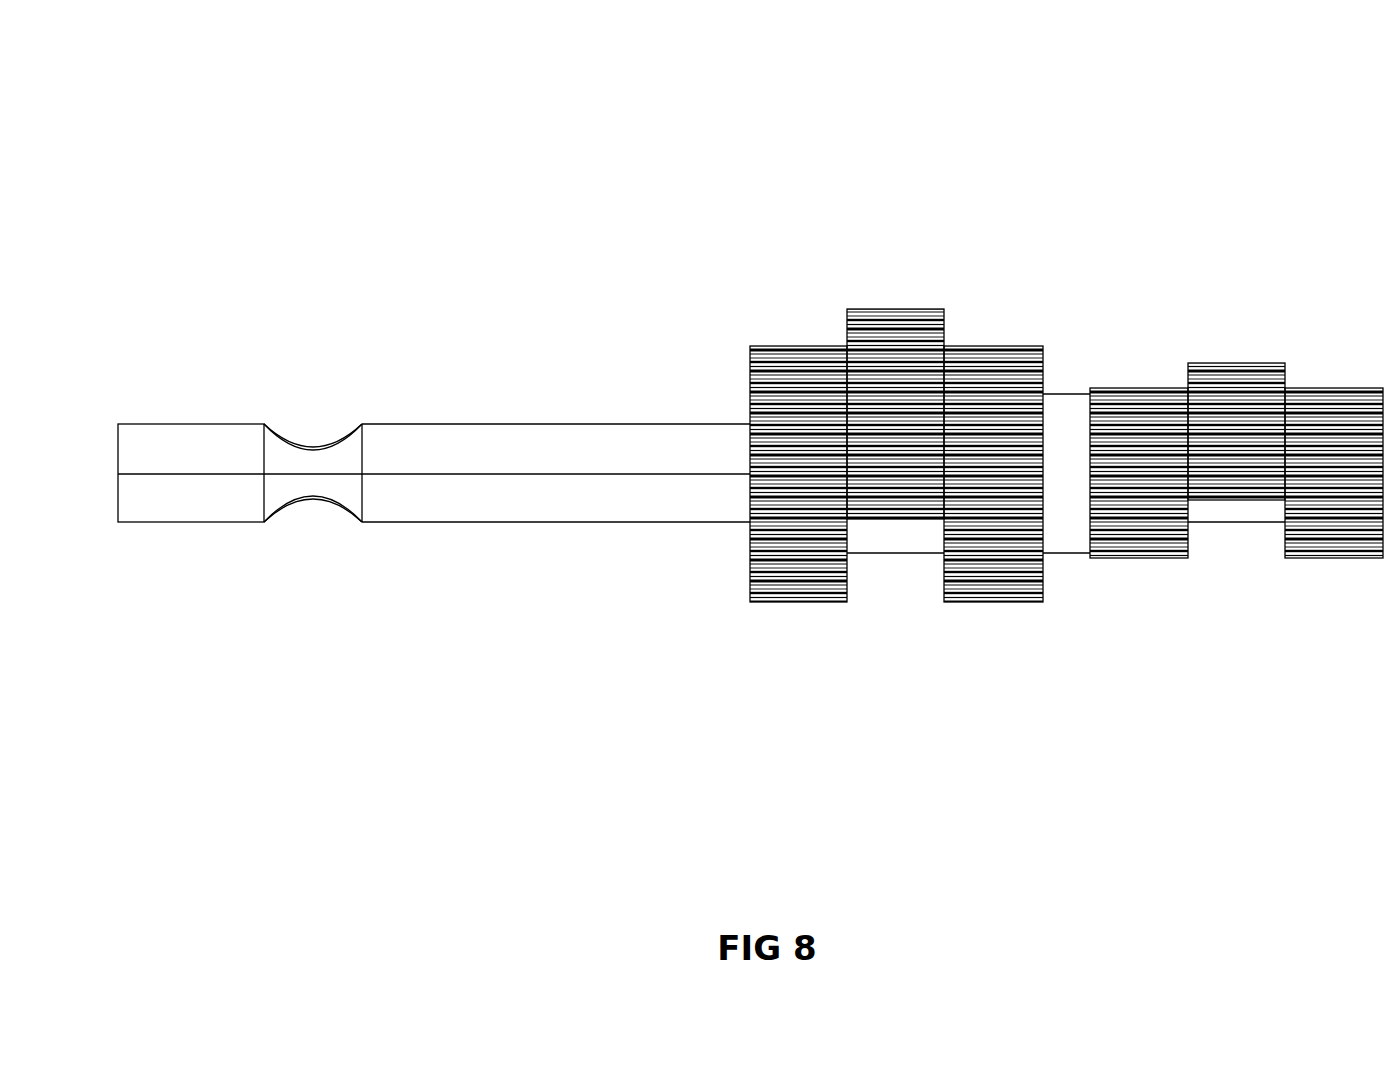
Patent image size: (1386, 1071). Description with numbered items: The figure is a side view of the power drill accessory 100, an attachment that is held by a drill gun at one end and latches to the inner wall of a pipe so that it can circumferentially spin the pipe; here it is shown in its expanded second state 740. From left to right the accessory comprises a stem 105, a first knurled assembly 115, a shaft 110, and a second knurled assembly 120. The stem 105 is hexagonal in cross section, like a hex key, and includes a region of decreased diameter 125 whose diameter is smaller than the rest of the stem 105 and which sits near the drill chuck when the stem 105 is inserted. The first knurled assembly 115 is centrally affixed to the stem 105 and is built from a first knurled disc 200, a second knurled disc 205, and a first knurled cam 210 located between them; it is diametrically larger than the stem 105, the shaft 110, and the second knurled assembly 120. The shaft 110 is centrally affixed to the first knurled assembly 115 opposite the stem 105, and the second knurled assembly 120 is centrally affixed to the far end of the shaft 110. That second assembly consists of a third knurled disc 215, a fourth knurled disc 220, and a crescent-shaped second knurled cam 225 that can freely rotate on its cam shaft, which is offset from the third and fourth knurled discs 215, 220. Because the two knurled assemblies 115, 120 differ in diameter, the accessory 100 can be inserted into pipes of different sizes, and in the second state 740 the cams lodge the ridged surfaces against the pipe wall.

The power drill accessory 100 is at (240, 116).
The stem 105 is at (511, 424).
The shaft 110 is at (1079, 392).
The first knurled assembly 115 is at (742, 615).
The second knurled assembly 120 is at (1085, 611).
The region of decreased diameter 125 is at (264, 540).
The first knurled disc 200 is at (806, 346).
The second knurled disc 205 is at (1002, 346).
The first knurled cam 210 is at (903, 309).
The third knurled disc 215 is at (1155, 388).
The fourth knurled disc 220 is at (1347, 388).
The second knurled cam 225 is at (1250, 363).
The second state 740 is at (320, 693).